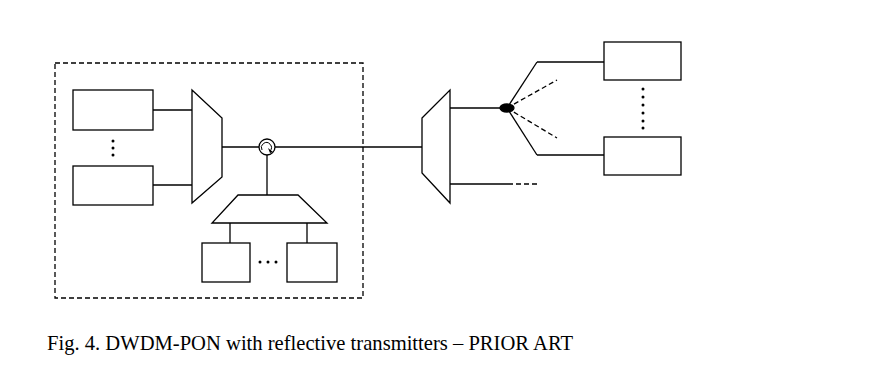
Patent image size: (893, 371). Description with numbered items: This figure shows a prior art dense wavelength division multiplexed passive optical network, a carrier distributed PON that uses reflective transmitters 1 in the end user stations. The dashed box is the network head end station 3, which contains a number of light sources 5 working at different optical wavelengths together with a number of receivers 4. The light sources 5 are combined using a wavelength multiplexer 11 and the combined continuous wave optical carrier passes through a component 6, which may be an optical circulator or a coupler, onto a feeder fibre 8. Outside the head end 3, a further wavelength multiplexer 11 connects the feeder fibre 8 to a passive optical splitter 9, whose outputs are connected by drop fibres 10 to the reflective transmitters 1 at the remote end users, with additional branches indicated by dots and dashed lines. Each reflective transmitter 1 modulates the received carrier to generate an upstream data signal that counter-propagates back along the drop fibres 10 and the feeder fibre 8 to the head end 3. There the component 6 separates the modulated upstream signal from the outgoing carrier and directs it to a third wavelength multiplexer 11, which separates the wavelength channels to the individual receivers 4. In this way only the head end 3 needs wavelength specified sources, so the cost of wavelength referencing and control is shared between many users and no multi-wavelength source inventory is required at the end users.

The reflective transmitter 1 is at (642, 108).
The head-end 3 is at (209, 180).
The receiver 4 is at (269, 262).
The light source 5 is at (132, 147).
The component 6 is at (267, 155).
The feeder fibre 8 is at (348, 133).
The passive optical splitter 9 is at (528, 108).
The drop fibre 10 is at (570, 94).
The wavelength multiplexer 11 is at (364, 166).